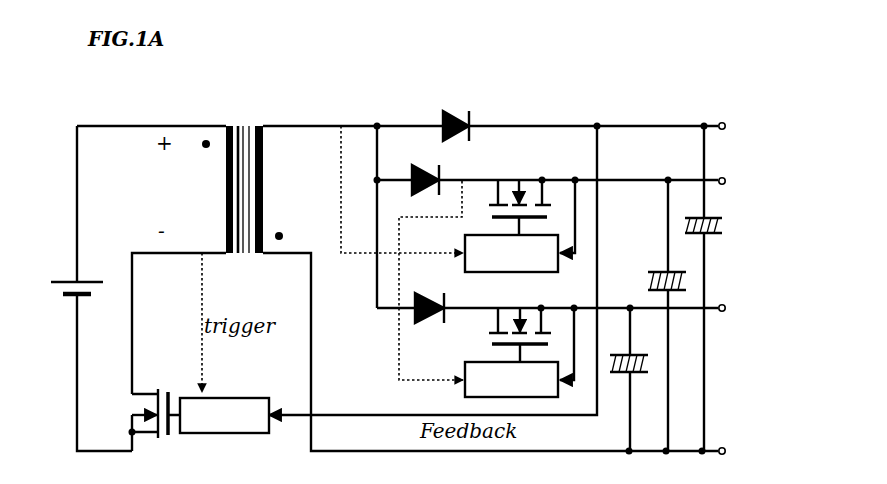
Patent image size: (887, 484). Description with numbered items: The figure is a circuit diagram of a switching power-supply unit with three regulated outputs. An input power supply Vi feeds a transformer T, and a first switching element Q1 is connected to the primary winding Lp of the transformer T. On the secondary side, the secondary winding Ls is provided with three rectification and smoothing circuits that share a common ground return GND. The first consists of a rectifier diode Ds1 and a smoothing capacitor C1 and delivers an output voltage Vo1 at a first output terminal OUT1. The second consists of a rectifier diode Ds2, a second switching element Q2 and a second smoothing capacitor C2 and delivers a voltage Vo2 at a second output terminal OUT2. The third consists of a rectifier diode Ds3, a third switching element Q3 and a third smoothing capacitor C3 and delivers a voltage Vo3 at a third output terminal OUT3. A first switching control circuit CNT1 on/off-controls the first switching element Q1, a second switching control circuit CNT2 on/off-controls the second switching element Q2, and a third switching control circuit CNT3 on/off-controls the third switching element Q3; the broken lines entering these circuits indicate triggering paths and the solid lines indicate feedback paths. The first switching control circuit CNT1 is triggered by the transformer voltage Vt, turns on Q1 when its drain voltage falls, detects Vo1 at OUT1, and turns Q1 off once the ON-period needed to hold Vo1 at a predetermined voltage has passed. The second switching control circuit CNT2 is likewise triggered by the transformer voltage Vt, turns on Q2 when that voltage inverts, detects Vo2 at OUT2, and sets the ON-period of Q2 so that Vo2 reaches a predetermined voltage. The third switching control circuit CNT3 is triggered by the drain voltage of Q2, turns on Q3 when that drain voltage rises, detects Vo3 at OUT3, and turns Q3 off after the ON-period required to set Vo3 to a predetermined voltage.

The transformer T is at (245, 153).
The primary winding Lp is at (212, 189).
The secondary winding Ls is at (276, 189).
The input power supply Vi is at (59, 293).
The transformer voltage Vt is at (158, 191).
The first switching element Q1 is at (138, 413).
The first switching control circuit CNT1 is at (224, 415).
The rectifier diode Ds1 is at (457, 111).
The rectifier diode Ds2 is at (409, 169).
The rectifier diode Ds3 is at (430, 296).
The second switching element Q2 is at (520, 192).
The third switching element Q3 is at (520, 319).
The second switching control circuit CNT2 is at (522, 225).
The third switching control circuit CNT3 is at (521, 351).
The smoothing capacitor C1 is at (719, 288).
The second smoothing capacitor C2 is at (673, 315).
The third smoothing capacitor C3 is at (638, 379).
The first output terminal OUT1 is at (762, 110).
The second output terminal OUT2 is at (762, 180).
The third output terminal OUT3 is at (762, 296).
The output voltage Vo1 is at (753, 143).
The voltage of second output terminal Vo2 is at (753, 204).
The voltage of third output terminal Vo3 is at (753, 323).
The ground terminal GND is at (760, 452).